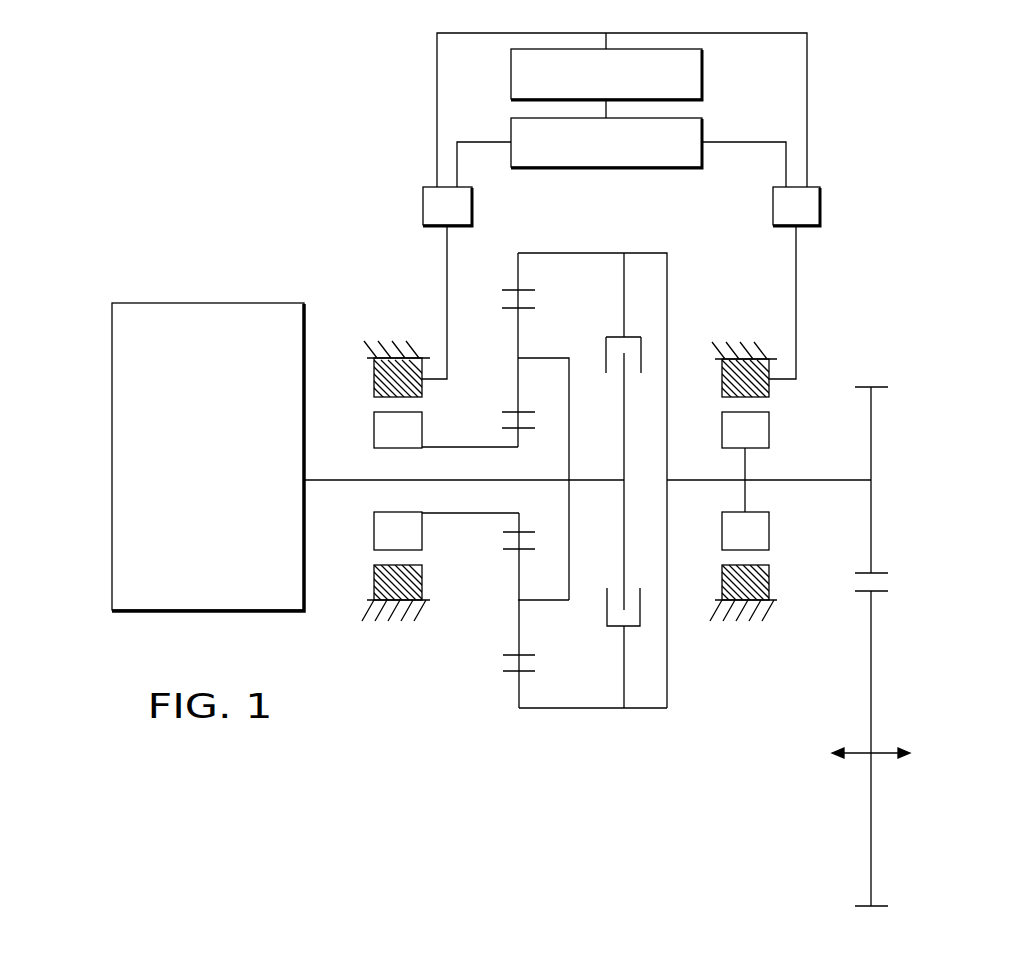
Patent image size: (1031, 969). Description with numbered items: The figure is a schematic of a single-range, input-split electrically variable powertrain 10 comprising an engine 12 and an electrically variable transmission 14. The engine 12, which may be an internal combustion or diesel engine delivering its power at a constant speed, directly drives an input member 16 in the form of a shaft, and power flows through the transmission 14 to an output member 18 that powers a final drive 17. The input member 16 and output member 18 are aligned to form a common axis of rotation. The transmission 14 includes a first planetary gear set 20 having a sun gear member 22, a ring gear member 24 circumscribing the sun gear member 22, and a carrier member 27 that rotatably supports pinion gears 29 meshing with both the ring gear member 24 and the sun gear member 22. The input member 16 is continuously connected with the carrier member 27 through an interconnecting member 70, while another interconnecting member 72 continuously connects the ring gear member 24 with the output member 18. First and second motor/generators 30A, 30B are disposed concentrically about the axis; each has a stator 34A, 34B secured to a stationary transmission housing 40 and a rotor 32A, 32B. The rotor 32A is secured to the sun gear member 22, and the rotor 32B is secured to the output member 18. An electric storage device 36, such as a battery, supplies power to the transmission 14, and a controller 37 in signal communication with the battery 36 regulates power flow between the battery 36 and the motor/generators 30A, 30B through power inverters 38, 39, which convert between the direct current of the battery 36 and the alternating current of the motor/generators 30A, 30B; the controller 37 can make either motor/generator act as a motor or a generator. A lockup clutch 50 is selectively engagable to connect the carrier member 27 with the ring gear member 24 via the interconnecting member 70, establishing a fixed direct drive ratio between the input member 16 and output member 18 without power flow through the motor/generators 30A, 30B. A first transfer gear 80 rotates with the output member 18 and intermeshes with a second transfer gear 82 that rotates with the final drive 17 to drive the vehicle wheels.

The powertrain 10 is at (924, 255).
The engine 12 is at (112, 420).
The electrically variable transmission 14 is at (589, 219).
The input member 16 is at (333, 482).
The final drive 17 is at (887, 756).
The output member 18 is at (823, 482).
The first planetary gear set 20 is at (498, 690).
The sun gear member 22 is at (510, 531).
The ring gear member 24 is at (522, 672).
The carrier member 27 is at (560, 603).
The pinion gears 29 is at (514, 590).
The first motor/generator 30A is at (436, 402).
The second motor/generator 30B is at (791, 402).
The rotor of first motor/generator 32A is at (374, 432).
The rotor of second motor/generator 32B is at (722, 432).
The stator of first motor/generator 34A is at (374, 378).
The stator of second motor/generator 34B is at (722, 378).
The electric storage device 36 is at (702, 75).
The controller 37 is at (702, 124).
The power inverter 38 is at (423, 205).
The power inverter 39 is at (820, 205).
The transmission housing 40 is at (392, 340).
The lockup clutch 50 is at (643, 646).
The interconnecting member 70 is at (569, 433).
The interconnecting member 72 is at (548, 250).
The first transfer gear 80 is at (871, 451).
The second transfer gear 82 is at (871, 667).